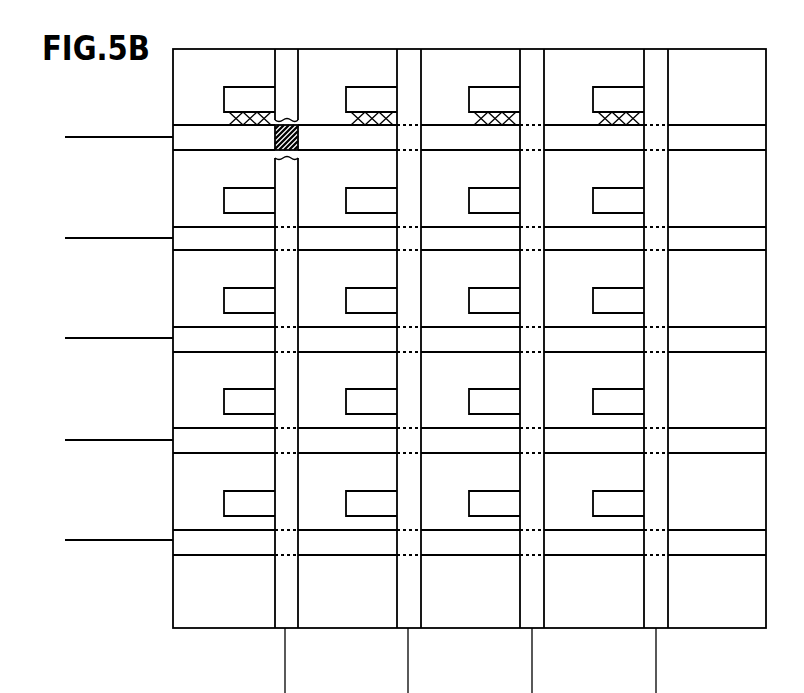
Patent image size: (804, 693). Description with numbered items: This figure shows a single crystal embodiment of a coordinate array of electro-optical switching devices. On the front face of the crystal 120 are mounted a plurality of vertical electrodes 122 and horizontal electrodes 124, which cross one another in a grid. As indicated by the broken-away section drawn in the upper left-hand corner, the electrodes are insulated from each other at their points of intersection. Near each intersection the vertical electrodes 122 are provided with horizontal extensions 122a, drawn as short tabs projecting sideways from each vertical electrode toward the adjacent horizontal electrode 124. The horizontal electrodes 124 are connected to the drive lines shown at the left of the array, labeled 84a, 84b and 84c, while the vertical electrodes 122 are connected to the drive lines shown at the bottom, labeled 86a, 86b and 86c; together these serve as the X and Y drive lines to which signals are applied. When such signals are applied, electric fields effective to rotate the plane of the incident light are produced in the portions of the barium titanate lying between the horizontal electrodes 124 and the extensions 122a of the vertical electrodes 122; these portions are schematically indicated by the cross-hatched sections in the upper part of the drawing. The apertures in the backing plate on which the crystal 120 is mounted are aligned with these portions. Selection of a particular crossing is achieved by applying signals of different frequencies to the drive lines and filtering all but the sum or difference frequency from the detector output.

The crystal 120 is at (340, 58).
The vertical electrodes 122 is at (407, 77).
The horizontal extensions 122a is at (247, 92).
The horizontal electrodes 124 is at (198, 230).
The word line 84a is at (113, 138).
The word line 84b is at (113, 239).
The word line 84c is at (118, 339).
The bit line terminal 86a is at (283, 664).
The bit line terminal 86b is at (406, 664).
The bit line terminal 86c is at (530, 664).